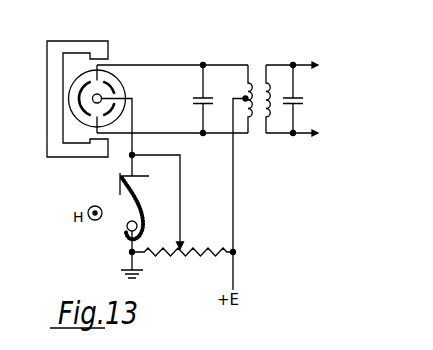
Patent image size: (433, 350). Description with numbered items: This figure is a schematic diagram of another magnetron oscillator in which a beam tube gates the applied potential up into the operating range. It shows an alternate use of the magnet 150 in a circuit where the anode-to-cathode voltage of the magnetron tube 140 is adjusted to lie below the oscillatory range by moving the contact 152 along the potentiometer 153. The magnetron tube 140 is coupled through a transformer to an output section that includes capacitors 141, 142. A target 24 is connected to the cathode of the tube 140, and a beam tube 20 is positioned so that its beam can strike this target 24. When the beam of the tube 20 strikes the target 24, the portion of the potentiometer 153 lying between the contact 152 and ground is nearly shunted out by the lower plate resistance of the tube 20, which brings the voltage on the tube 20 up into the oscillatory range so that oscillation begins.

The magnet 150 is at (77, 31).
The tube 140 is at (124, 81).
The capacitor (primary side) 141 is at (231, 64).
The capacitor (secondary side) 142 is at (272, 64).
The target 24 is at (119, 179).
The tube 20 is at (101, 255).
The contact 152 is at (181, 213).
The potentiometer 153 is at (190, 258).